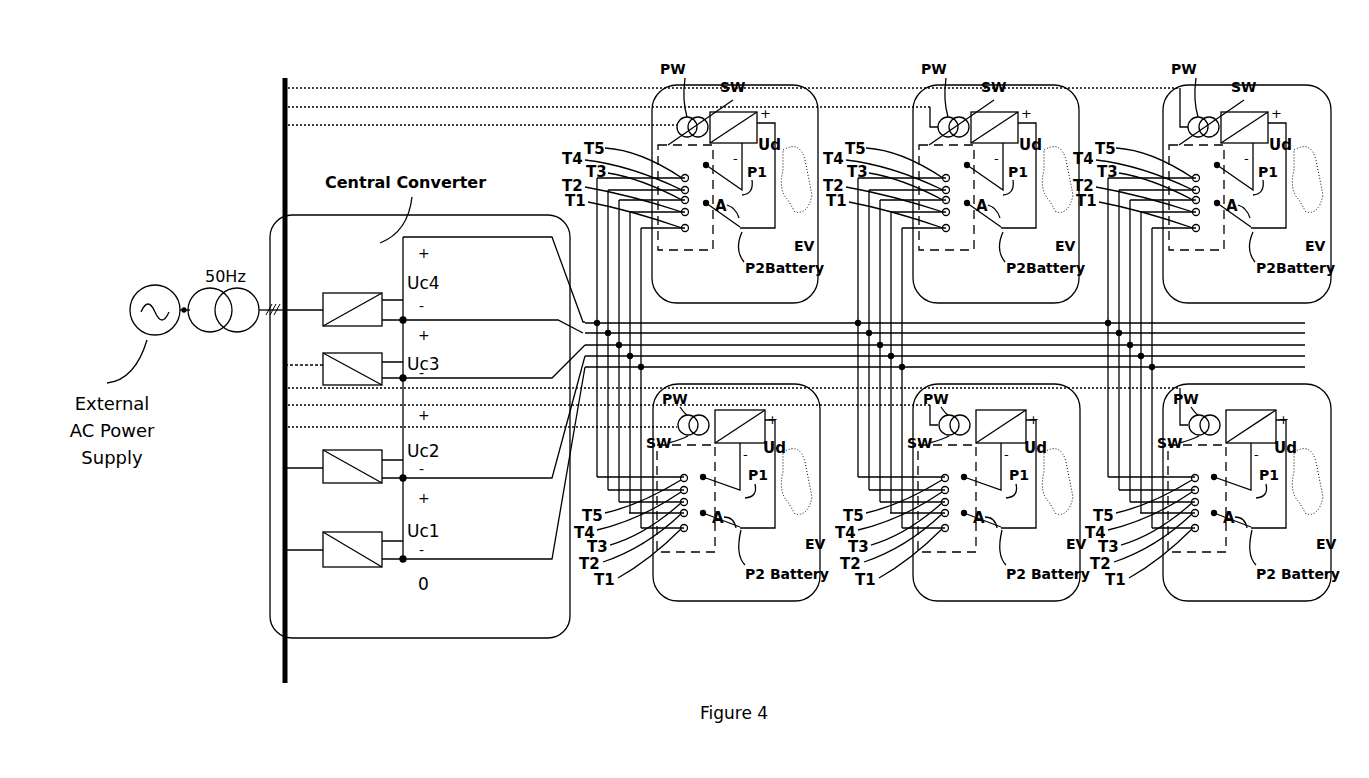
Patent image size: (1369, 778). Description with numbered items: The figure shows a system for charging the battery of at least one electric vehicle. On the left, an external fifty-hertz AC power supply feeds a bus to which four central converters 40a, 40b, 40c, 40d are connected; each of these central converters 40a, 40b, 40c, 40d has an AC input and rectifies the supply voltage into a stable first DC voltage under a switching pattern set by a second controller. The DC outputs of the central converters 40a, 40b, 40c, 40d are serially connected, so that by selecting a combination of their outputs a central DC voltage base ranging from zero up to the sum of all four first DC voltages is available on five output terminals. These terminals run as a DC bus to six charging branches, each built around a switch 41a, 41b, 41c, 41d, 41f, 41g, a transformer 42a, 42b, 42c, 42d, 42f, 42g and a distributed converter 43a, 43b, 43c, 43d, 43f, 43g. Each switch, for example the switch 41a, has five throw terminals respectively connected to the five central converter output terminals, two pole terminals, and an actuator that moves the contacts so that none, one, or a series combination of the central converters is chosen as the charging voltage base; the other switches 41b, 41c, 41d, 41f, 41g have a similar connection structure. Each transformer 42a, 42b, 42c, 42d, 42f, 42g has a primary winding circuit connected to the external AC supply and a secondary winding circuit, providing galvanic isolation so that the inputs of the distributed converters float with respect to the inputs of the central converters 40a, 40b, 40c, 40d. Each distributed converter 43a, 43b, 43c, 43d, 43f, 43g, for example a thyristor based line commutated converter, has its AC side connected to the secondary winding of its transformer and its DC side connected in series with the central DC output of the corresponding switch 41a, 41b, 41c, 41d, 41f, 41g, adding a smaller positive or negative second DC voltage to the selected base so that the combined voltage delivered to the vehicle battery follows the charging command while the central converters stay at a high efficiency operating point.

The central converter 40a is at (365, 568).
The central converter 40b is at (368, 485).
The central converter 40c is at (365, 387).
The central converter 40d is at (364, 327).
The switch 41a is at (713, 530).
The switch 41b is at (974, 530).
The switch 41c is at (1224, 530).
The switch 41d is at (710, 181).
The switch 41f is at (971, 181).
The switch 41g is at (1221, 181).
The transformer 42a is at (690, 415).
The transformer 42b is at (966, 412).
The transformer 42c is at (1215, 412).
The transformer 42d is at (700, 117).
The transformer 42f is at (962, 98).
The transformer 42g is at (1214, 98).
The distributed converter 43a is at (741, 414).
The distributed converter 43b is at (1010, 416).
The distributed converter 43c is at (1259, 416).
The distributed converter 43d is at (734, 113).
The distributed converter 43f is at (1006, 102).
The distributed converter 43g is at (1258, 102).